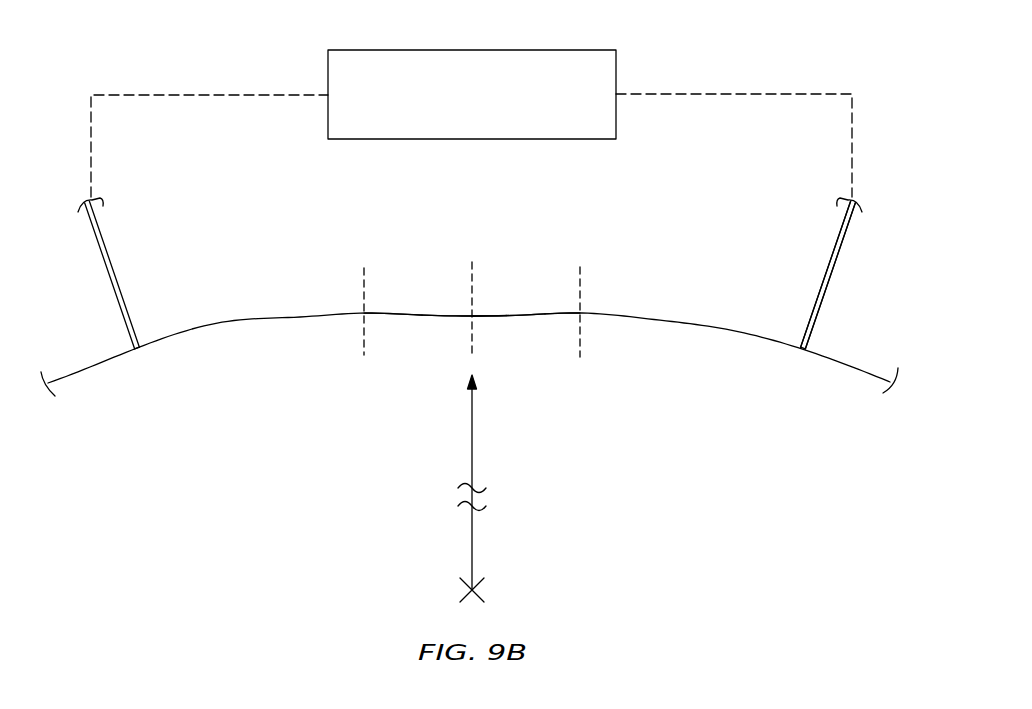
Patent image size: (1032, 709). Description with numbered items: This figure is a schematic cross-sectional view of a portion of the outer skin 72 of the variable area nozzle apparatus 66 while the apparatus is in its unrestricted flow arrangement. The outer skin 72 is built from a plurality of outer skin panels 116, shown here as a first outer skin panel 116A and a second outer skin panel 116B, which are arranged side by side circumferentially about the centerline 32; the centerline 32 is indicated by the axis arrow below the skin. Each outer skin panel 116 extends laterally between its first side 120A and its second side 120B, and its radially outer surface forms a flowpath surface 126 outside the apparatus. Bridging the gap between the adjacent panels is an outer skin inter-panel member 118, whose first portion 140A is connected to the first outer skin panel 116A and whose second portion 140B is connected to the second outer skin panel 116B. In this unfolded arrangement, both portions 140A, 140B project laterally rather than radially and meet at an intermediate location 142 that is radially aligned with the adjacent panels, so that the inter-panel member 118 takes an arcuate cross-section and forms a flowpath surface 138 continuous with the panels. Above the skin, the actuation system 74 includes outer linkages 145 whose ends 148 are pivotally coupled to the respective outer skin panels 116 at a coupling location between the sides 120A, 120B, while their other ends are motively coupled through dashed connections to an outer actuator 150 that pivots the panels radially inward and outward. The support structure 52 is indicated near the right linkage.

The actuation system 74 is at (276, 64).
The outer actuator 150 is at (616, 67).
The support structure 52 is at (869, 226).
The variable area nozzle apparatus 66 is at (879, 182).
The outer linkage 145 is at (107, 230).
The outer skin panel 116 is at (469, 302).
The first outer skin panel 116A is at (231, 301).
The second outer skin panel 116B is at (691, 299).
The flowpath surface 126 is at (92, 365).
The outer skin 72 is at (869, 306).
The end of outer linkage 148 is at (98, 362).
The first side of outer skin panel 120A is at (363, 315).
The second side of outer skin panel 120B is at (580, 315).
The intermediate location 142 is at (477, 317).
The first portion of outer skin inter-panel member 140A is at (422, 313).
The second portion of outer skin inter-panel member 140B is at (545, 313).
The flowpath surface 138 is at (507, 317).
The outer skin inter-panel member 118 is at (527, 412).
The centerline 32 is at (475, 593).